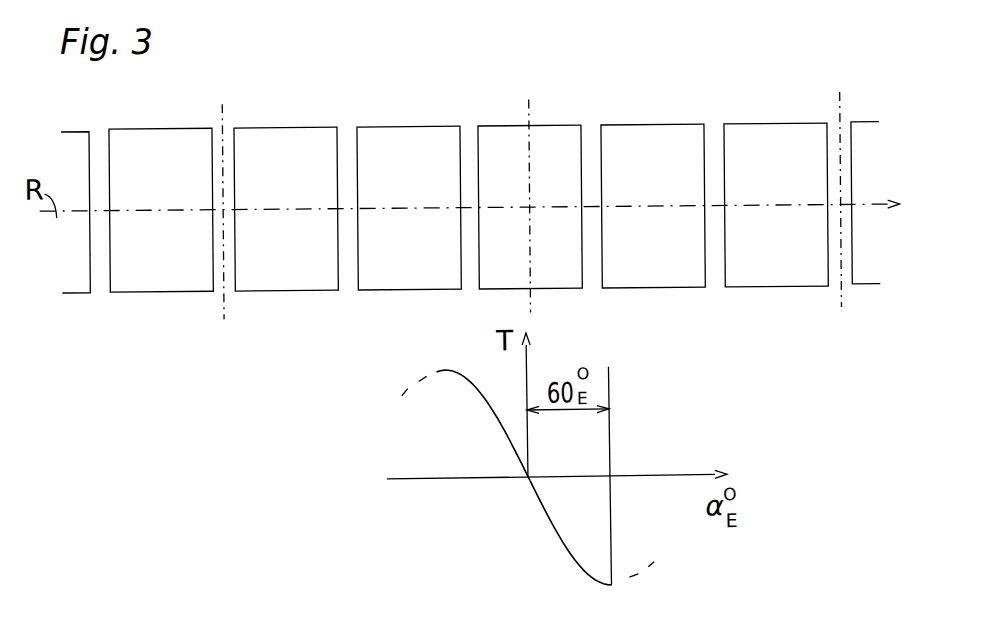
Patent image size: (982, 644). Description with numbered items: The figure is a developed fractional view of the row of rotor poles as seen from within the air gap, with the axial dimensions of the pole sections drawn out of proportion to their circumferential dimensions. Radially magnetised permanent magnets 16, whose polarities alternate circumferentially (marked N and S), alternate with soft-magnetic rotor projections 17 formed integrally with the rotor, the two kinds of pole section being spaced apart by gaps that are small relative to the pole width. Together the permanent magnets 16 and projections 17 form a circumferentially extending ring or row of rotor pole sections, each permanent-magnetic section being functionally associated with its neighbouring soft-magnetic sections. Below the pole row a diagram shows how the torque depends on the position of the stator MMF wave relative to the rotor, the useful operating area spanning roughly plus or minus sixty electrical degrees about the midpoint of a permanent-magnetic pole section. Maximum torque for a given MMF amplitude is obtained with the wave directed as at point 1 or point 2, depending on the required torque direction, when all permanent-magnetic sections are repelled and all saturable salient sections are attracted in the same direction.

The permanent magnet 16 is at (285, 142).
The soft-magnetic rotor projection 17 is at (147, 144).
The point 1 is at (465, 409).
The point 2 is at (592, 551).